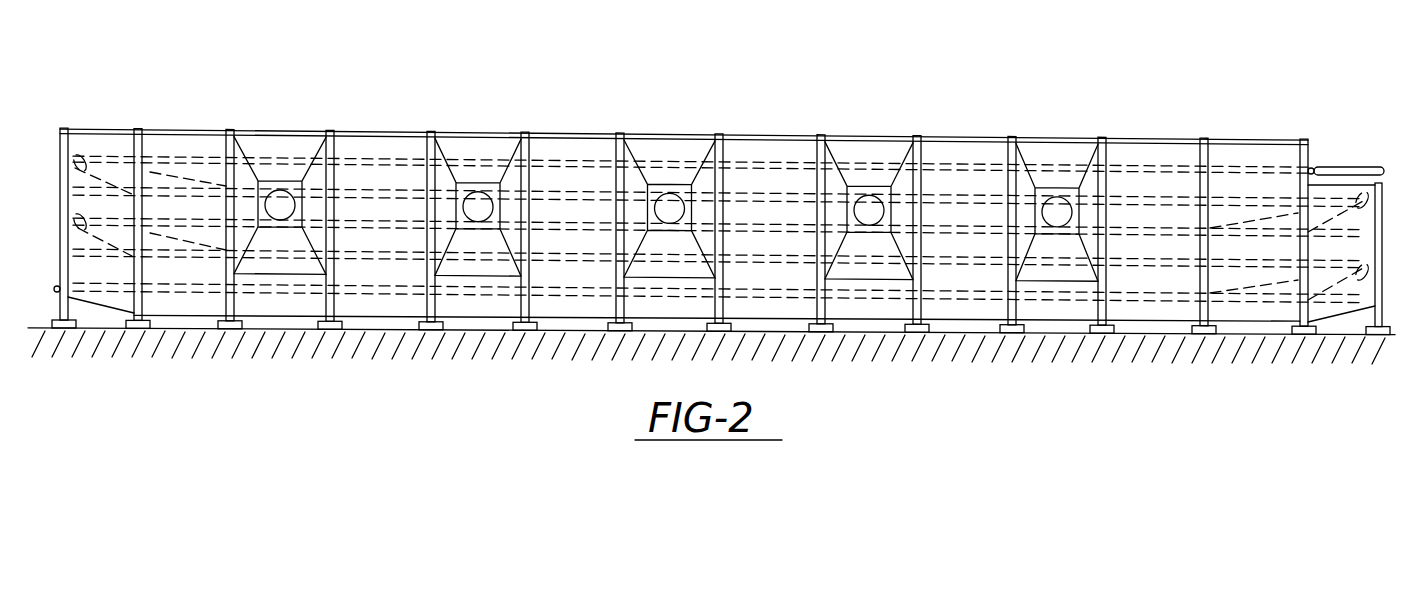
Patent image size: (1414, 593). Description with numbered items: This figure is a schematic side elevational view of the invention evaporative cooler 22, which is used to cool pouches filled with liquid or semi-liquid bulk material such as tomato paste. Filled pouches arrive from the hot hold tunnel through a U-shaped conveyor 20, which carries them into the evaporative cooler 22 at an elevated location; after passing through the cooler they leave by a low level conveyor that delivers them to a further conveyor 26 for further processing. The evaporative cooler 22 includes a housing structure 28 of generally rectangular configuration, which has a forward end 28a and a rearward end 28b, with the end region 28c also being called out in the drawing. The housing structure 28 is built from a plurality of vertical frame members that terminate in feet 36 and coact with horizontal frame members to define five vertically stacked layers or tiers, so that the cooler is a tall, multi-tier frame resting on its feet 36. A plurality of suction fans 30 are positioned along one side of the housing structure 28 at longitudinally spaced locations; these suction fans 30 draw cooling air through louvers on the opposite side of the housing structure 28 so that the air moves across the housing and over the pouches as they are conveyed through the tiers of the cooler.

The U-shaped conveyor 20 is at (1356, 168).
The evaporative cooler 22 is at (763, 123).
The further conveyor 26 is at (496, 6).
The housing structure 28 is at (583, 135).
The forward end 28a is at (122, 128).
The rearward end 28b is at (1312, 146).
The left end post 28c is at (53, 308).
The suction fans 30 is at (272, 191).
The feet 36 is at (228, 331).